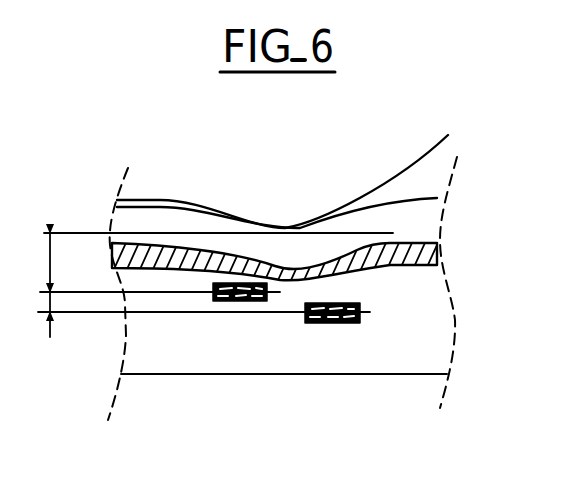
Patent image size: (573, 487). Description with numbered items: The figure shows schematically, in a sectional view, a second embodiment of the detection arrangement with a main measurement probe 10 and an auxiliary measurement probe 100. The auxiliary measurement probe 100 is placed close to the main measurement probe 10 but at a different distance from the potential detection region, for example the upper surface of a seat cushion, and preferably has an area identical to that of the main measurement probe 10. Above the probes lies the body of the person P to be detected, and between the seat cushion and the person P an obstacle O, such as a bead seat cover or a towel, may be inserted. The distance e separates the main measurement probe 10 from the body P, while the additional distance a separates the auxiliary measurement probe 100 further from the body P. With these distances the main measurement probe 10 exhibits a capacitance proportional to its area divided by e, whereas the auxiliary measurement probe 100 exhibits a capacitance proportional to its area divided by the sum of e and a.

The main measurement probe 10 is at (233, 301).
The auxiliary measurement probe 100 is at (340, 323).
The person P is at (308, 253).
The obstacle O is at (430, 254).
The distance separating the measurement probe from the body e is at (34, 262).
The additional distance a is at (195, 308).